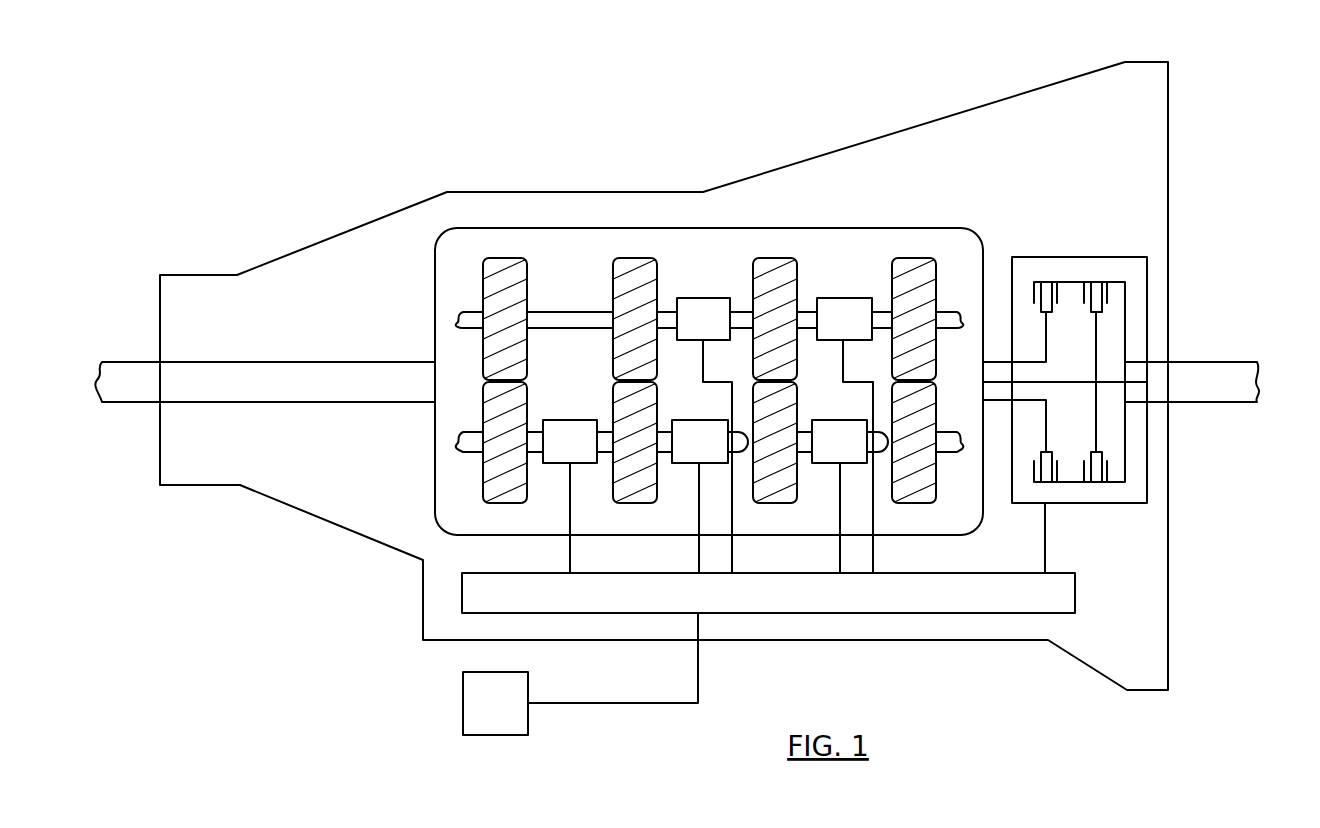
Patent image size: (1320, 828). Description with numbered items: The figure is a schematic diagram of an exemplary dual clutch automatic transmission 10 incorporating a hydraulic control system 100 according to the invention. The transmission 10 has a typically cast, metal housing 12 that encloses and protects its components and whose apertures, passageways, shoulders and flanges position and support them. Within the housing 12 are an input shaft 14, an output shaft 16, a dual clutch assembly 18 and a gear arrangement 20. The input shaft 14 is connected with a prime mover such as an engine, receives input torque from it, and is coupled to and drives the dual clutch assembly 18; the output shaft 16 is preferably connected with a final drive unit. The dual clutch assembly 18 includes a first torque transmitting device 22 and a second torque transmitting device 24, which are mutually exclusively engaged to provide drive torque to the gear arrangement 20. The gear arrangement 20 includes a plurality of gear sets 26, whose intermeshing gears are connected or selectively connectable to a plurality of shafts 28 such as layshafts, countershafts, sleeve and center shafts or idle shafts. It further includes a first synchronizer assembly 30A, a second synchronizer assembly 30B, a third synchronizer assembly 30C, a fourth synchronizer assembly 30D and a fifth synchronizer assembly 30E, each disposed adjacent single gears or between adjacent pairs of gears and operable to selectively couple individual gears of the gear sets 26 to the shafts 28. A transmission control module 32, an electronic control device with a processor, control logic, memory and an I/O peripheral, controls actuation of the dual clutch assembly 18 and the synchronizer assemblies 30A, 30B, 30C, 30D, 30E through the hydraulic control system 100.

The dual clutch automatic transmission 10 is at (1236, 58).
The housing 12 is at (512, 192).
The input shaft 14 is at (1218, 360).
The output shaft 16 is at (121, 360).
The dual clutch assembly 18 is at (1148, 273).
The gear arrangement 20 is at (487, 226).
The first torque transmitting device 22 is at (1057, 463).
The second torque transmitting device 24 is at (1109, 468).
The gear sets 26 is at (513, 257).
The shafts 28 is at (582, 311).
The first synchronizer assembly 30A is at (570, 496).
The second synchronizer assembly 30B is at (700, 496).
The third synchronizer assembly 30C is at (839, 496).
The fourth synchronizer assembly 30D is at (845, 435).
The fifth synchronizer assembly 30E is at (704, 435).
The transmission control module 32 is at (580, 674).
The hydraulic control system 100 is at (768, 593).